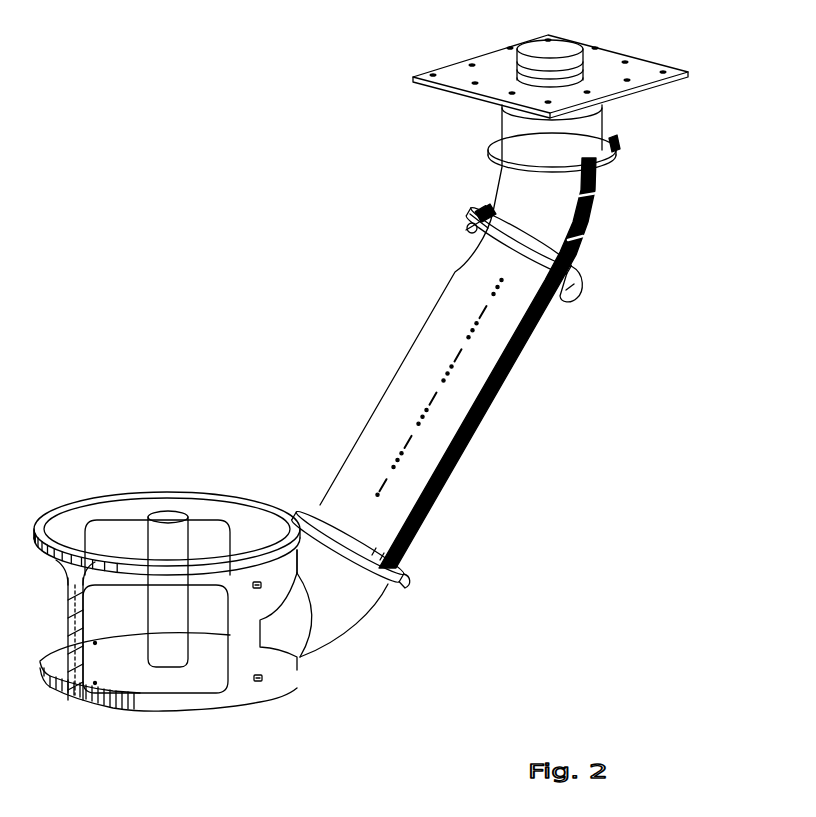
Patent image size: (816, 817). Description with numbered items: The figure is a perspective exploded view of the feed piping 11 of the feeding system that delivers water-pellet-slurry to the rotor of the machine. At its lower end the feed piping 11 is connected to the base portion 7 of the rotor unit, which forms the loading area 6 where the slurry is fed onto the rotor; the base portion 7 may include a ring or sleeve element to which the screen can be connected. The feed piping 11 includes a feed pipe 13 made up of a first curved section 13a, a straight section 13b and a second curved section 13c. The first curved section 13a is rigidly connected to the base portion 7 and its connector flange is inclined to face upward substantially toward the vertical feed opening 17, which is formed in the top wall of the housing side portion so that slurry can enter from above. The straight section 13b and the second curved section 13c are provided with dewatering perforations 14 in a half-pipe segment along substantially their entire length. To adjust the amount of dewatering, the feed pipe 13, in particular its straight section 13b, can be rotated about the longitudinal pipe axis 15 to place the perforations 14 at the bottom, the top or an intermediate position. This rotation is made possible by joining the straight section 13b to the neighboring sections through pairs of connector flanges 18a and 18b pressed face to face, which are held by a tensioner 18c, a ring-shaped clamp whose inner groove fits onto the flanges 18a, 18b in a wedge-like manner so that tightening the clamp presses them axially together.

The loading area 6 is at (252, 522).
The base portion 7 is at (267, 696).
The feed piping 11 is at (501, 336).
The feed pipe 13 is at (412, 341).
The first curved section 13a is at (358, 610).
The straight section 13b is at (380, 410).
The second curved section 13c is at (505, 196).
The dewatering perforations 14 is at (470, 440).
The longitudinal pipe axis 15 is at (450, 372).
The vertical feed opening 17 is at (587, 66).
The connector flange 18a is at (492, 238).
The connector flange 18b is at (526, 224).
The tensioner 18c is at (470, 222).